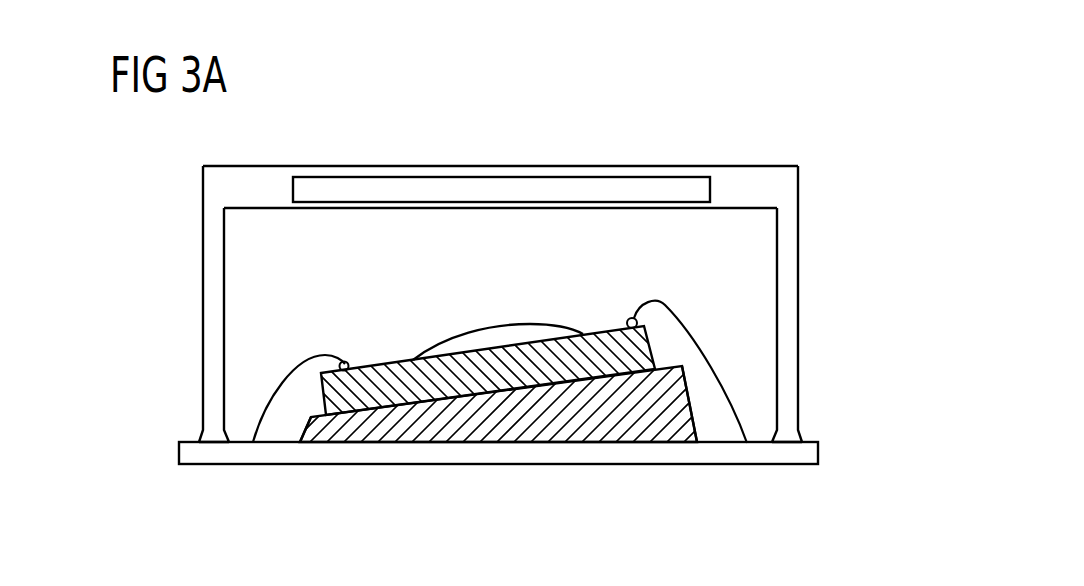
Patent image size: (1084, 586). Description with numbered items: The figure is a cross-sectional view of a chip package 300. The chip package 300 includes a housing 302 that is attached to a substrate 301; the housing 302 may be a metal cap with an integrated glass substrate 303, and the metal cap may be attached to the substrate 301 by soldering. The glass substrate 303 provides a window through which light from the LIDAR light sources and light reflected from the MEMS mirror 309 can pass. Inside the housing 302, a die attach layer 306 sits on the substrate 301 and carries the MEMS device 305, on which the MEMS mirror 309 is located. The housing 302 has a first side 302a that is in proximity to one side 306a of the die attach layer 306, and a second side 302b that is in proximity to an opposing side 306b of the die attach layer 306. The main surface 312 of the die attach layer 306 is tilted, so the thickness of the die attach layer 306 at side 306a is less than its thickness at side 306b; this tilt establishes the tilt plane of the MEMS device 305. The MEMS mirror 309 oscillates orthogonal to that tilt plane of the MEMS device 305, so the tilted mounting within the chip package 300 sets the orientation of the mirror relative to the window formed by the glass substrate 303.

The chip package 300 is at (781, 135).
The substrate 301 is at (820, 450).
The housing 302 is at (366, 166).
The first side of the housing 302a is at (203, 309).
The second side of the housing 302b is at (800, 308).
The glass substrate 303 is at (500, 177).
The MEMS device 305 is at (598, 330).
The die attach layer 306 is at (510, 425).
The side of the die attach layer 306a is at (300, 431).
The opposing side of the die attach layer 306b is at (704, 430).
The MEMS mirror 309 is at (492, 327).
The main surface of the die attach layer 312 is at (318, 413).